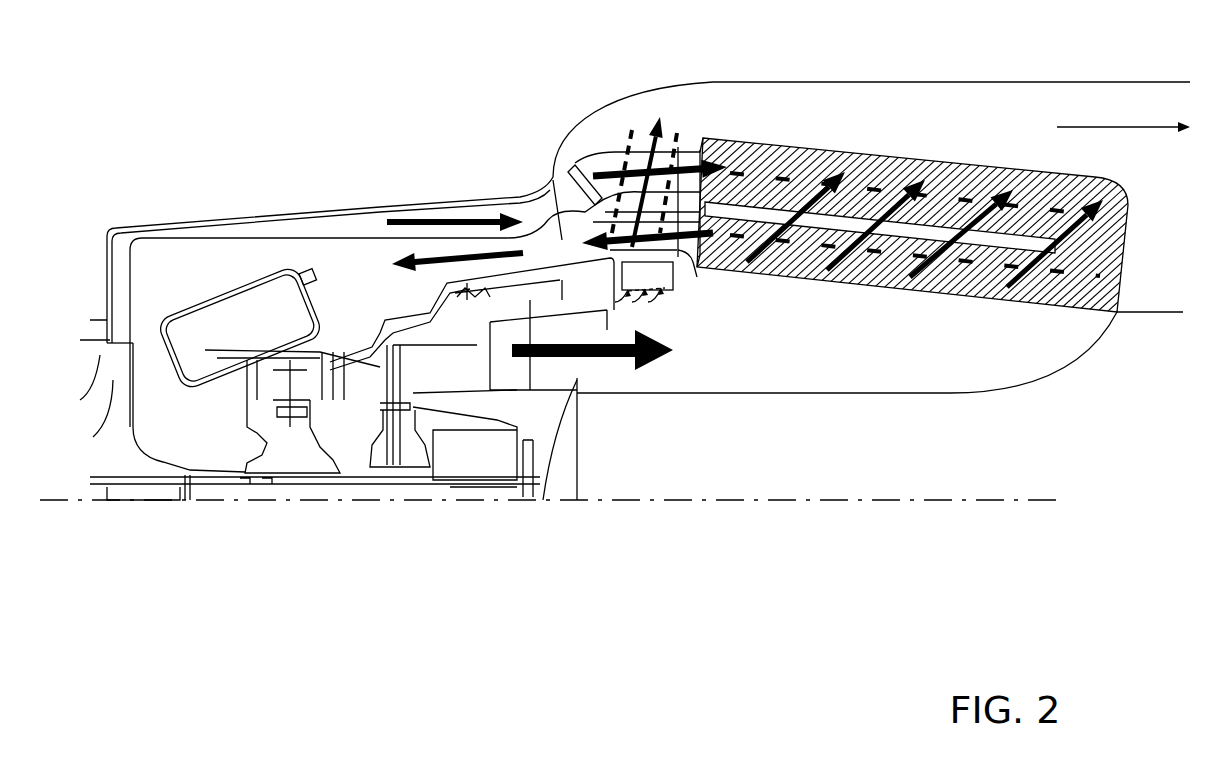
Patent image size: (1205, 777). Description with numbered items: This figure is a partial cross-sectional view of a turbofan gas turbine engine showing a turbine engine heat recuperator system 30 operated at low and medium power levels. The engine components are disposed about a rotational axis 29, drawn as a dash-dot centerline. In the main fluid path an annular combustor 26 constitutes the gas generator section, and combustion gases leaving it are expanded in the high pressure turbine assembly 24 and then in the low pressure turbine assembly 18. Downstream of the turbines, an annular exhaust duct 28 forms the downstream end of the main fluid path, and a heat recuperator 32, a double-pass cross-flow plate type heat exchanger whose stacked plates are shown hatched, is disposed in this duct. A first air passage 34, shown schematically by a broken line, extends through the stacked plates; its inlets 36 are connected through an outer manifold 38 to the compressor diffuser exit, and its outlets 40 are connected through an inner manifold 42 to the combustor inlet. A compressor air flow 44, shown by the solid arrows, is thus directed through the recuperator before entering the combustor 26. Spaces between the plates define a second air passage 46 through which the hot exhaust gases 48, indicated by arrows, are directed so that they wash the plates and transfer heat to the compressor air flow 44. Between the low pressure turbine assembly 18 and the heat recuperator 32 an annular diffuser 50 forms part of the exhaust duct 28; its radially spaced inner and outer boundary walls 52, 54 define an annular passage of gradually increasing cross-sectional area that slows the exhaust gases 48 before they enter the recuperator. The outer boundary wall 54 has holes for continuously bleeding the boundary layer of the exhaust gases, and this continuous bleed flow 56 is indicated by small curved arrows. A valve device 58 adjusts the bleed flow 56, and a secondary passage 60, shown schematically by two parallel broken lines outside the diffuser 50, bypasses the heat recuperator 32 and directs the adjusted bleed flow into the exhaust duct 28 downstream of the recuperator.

The low pressure turbine assembly 18 is at (393, 460).
The high pressure turbine assembly 24 is at (293, 457).
The annular combustor 26 is at (218, 300).
The annular exhaust duct 28 is at (938, 131).
The rotational axis 29 is at (973, 497).
The turbine engine heat recuperator system 30 is at (903, 70).
The heat recuperator 32 is at (883, 292).
The first air passage 34 is at (747, 168).
The inlets 36 is at (697, 147).
The outer manifold 38 is at (537, 205).
The outlets 40 is at (677, 277).
The inner manifold 42 is at (553, 177).
The compressor air flow 44 is at (455, 217).
The second air passage 46 is at (832, 155).
The hot exhaust gases 48 is at (1000, 197).
The annular diffuser 50 is at (763, 373).
The inner boundary wall 52 is at (667, 397).
The outer boundary wall 54 is at (598, 303).
The continuous bleed flow 56 is at (653, 140).
The valve device 58 is at (682, 273).
The secondary passage 60 is at (627, 142).